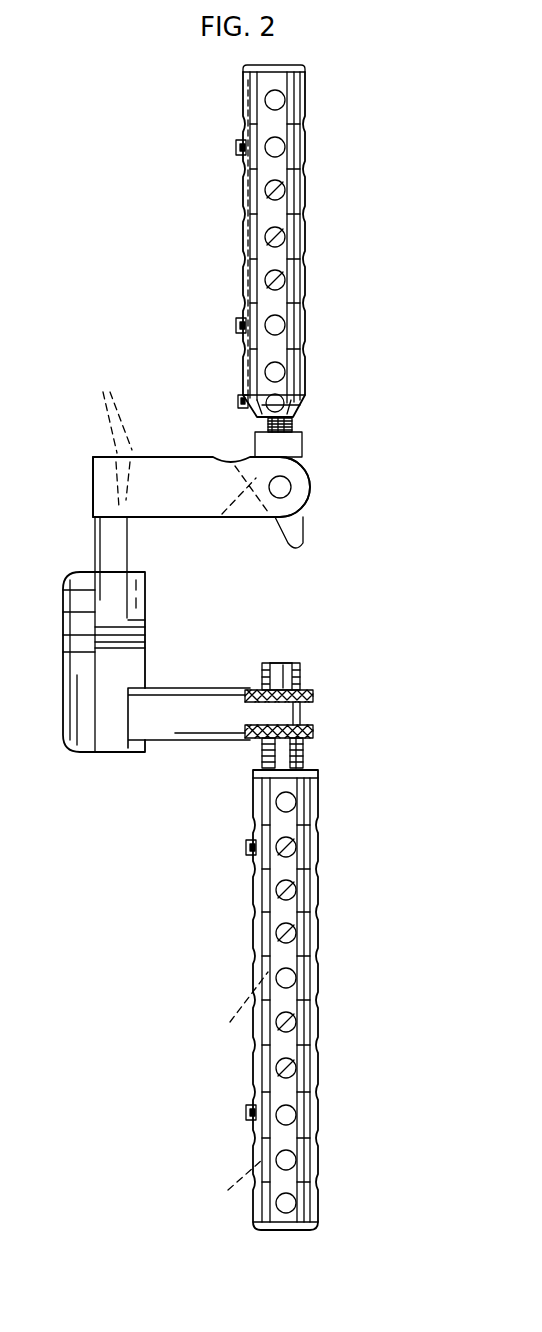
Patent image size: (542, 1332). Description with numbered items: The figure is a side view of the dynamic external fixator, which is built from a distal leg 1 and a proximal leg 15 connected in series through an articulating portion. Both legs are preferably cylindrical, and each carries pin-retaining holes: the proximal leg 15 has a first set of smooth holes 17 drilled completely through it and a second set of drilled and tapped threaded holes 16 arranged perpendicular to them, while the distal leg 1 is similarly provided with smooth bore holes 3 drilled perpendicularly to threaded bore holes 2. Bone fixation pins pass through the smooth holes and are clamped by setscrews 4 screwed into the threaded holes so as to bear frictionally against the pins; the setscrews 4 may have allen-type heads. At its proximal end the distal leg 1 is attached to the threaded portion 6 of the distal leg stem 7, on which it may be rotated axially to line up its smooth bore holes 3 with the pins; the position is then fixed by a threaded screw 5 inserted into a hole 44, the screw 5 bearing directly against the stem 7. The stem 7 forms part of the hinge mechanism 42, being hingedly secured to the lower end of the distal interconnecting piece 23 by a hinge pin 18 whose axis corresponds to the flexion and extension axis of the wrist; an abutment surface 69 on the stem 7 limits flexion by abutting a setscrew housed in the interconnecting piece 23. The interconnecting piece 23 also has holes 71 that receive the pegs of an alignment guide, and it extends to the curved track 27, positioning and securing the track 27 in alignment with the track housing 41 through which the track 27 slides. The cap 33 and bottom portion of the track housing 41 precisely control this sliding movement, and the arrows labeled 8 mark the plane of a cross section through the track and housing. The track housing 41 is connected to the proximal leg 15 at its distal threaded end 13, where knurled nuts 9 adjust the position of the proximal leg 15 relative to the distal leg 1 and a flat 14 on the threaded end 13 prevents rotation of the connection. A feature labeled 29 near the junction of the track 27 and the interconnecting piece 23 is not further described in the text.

The distal leg 1 is at (308, 113).
The threaded bore holes 2 is at (250, 195).
The smooth bore holes 3 is at (300, 290).
The setscrews 4 is at (237, 148).
The threaded screw 5 is at (240, 400).
The threaded portion 6 is at (292, 425).
The distal leg stem 7 is at (298, 535).
The section line 8 is at (83, 540).
The knurled nuts 9 is at (315, 733).
The distal threaded end 13 is at (300, 682).
The flat 14 is at (283, 672).
The proximal leg 15 is at (320, 1180).
The threaded holes 16 is at (262, 1050).
The smooth holes 17 is at (295, 934).
The hinge pin 18 is at (283, 488).
The distal interconnecting piece 23 is at (160, 466).
The curved track 27 is at (103, 522).
The bracket edge 29 is at (93, 480).
The cap 33 is at (72, 678).
The track housing 41 is at (145, 628).
The hinge mechanism 42 is at (318, 472).
The hole 44 is at (300, 405).
The abutment surface 69 is at (256, 444).
The holes 71 is at (110, 434).